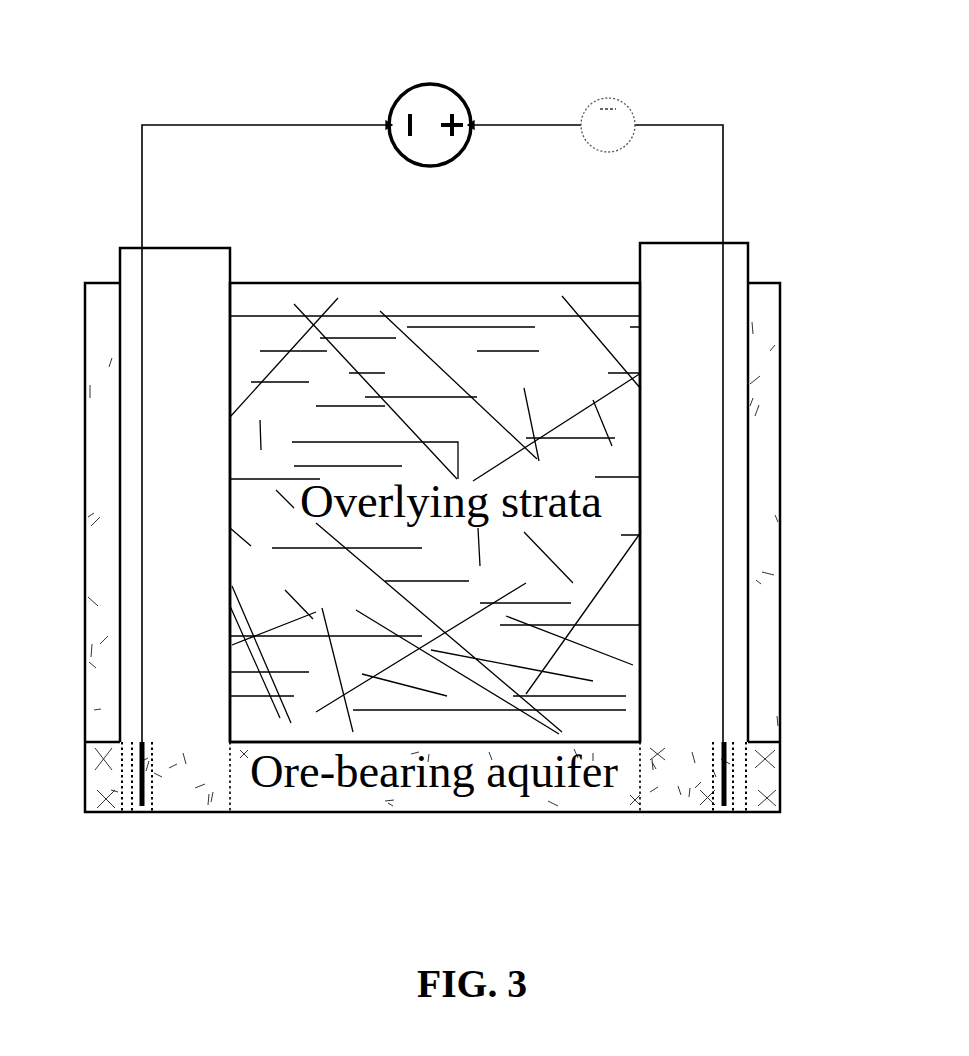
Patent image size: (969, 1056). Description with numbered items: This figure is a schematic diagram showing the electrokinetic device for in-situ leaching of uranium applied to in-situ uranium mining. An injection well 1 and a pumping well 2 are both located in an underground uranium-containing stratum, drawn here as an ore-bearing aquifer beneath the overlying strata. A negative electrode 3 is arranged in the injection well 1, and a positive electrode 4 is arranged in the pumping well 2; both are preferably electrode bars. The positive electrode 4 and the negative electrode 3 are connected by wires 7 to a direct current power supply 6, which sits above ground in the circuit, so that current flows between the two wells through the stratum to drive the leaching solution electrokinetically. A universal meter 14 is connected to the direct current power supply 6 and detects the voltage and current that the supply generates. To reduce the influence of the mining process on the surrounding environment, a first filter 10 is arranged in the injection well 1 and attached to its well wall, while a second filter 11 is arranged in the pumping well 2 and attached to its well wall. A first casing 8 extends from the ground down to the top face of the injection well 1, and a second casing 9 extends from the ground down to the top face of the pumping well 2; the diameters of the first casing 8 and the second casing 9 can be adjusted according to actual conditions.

The injection well 1 is at (182, 788).
The pumping well 2 is at (680, 767).
The negative electrode 3 is at (138, 753).
The positive electrode 4 is at (727, 773).
The direct current power supply 6 is at (458, 103).
The wires 7 is at (683, 123).
The first casing 8 is at (177, 257).
The second casing 9 is at (697, 250).
The first filter 10 is at (230, 767).
The second filter 11 is at (642, 770).
The universal meter 14 is at (618, 102).